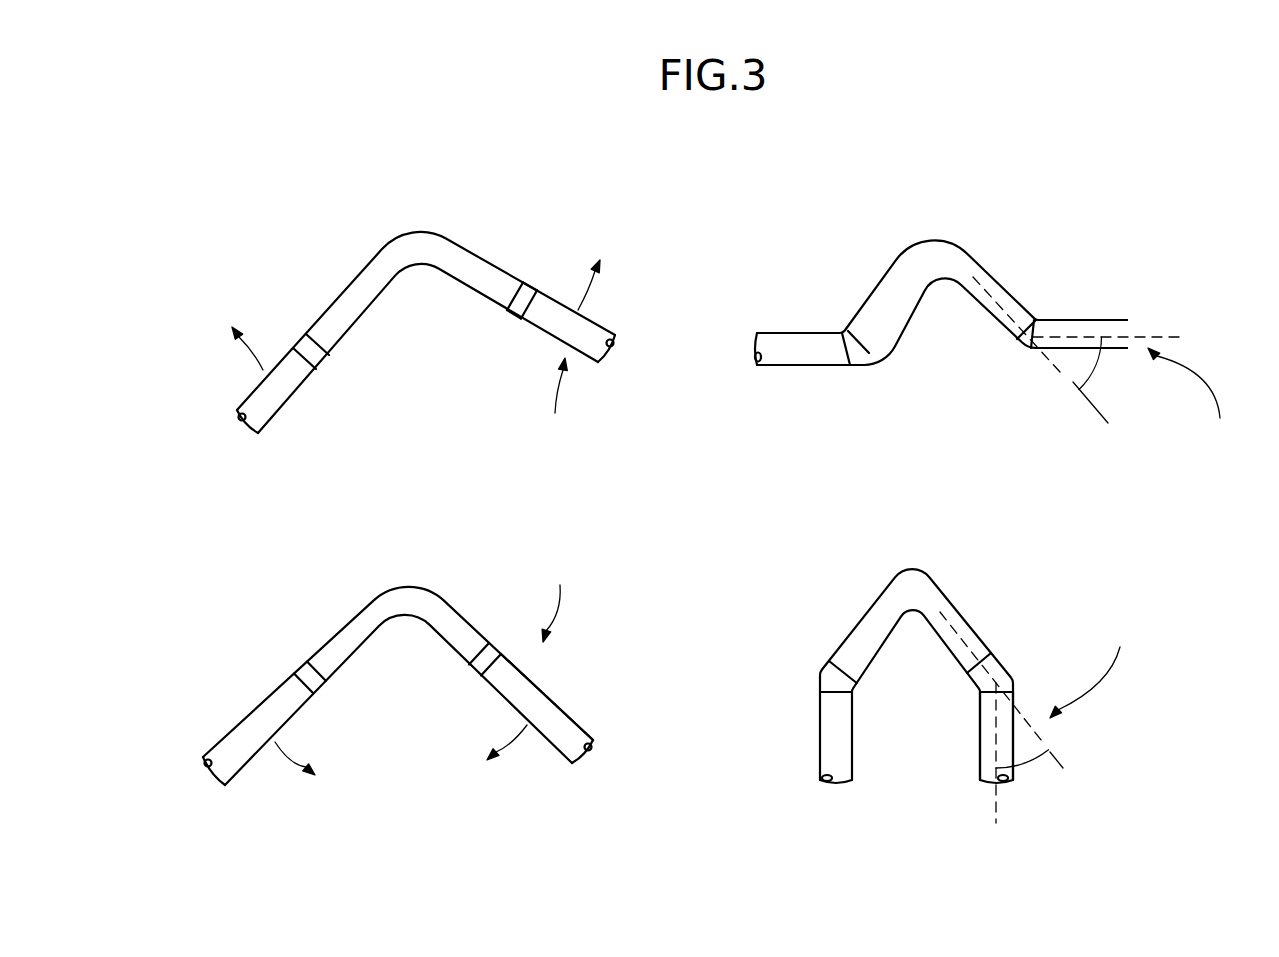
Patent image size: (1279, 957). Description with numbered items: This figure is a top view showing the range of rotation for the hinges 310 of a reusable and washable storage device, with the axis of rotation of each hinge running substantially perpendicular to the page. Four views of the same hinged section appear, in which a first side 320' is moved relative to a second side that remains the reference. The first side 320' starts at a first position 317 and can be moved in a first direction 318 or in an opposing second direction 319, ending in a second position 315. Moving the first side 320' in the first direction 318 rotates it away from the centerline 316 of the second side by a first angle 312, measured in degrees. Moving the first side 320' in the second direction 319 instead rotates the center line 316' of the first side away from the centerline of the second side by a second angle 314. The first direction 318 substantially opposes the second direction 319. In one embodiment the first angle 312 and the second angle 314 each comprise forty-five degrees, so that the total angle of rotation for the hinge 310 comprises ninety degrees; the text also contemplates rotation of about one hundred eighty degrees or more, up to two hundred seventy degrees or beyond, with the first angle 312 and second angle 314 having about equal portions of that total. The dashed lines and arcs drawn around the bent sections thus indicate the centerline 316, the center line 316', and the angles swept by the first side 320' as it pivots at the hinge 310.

The hinge 310 is at (300, 352).
The first angle 312 is at (1098, 365).
The second angle 314 is at (1033, 765).
The second position 315 is at (1153, 558).
The centerline 316 is at (953, 772).
The center line of the first side 316' is at (1138, 300).
The first position 317 is at (411, 484).
The first direction 318 is at (592, 288).
The second direction 319 is at (401, 754).
The first side 320' is at (848, 503).